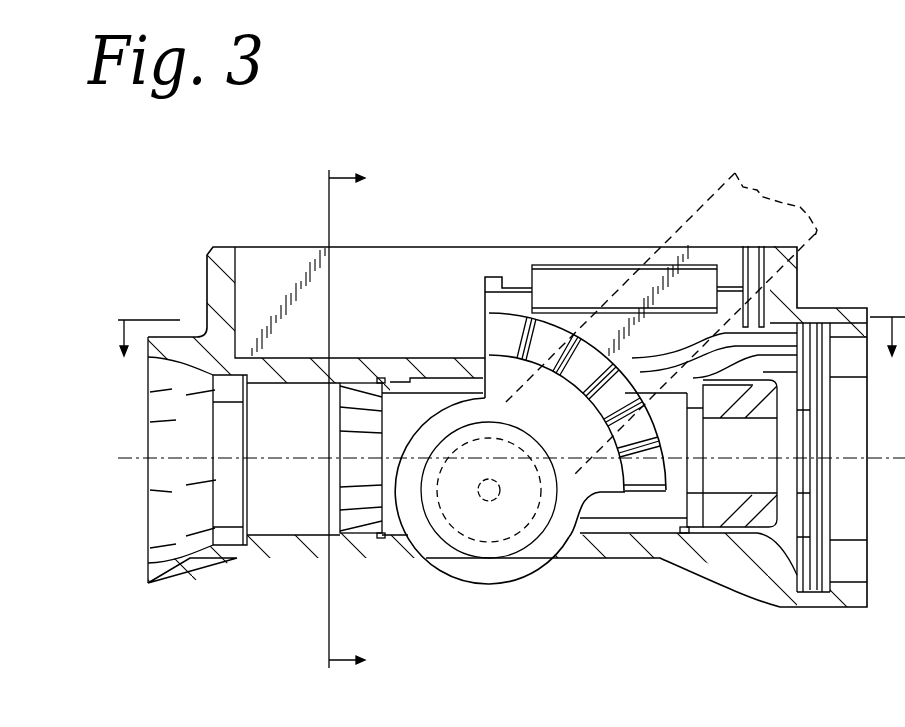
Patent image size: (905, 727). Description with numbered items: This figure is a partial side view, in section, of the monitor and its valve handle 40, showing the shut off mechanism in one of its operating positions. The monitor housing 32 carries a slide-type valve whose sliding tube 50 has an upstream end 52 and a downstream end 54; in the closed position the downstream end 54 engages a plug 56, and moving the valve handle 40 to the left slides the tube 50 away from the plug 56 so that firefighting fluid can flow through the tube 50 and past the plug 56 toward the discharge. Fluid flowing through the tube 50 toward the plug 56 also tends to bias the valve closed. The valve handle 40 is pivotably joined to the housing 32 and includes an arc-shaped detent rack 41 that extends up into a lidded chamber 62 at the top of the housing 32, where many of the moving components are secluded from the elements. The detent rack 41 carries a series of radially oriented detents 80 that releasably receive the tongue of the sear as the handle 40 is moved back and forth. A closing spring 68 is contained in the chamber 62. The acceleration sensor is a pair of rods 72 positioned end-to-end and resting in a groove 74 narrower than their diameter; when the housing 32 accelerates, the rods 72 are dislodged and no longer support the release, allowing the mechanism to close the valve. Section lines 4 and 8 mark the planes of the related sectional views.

The section line 4- 4 is at (355, 421).
The section line 8- 8 is at (511, 352).
The monitor housing 32 is at (220, 268).
The valve handle 40 is at (692, 237).
The arc-shaped detent rack 41 is at (500, 338).
The sliding tube 50 is at (635, 527).
The upstream end 52 is at (378, 548).
The downstream end 54 is at (710, 528).
The plug 56 is at (757, 490).
The lidded chamber 62 is at (423, 318).
The closing spring 68 is at (573, 283).
The rods 72 is at (850, 300).
The groove 74 is at (845, 455).
The detents 80 is at (522, 328).